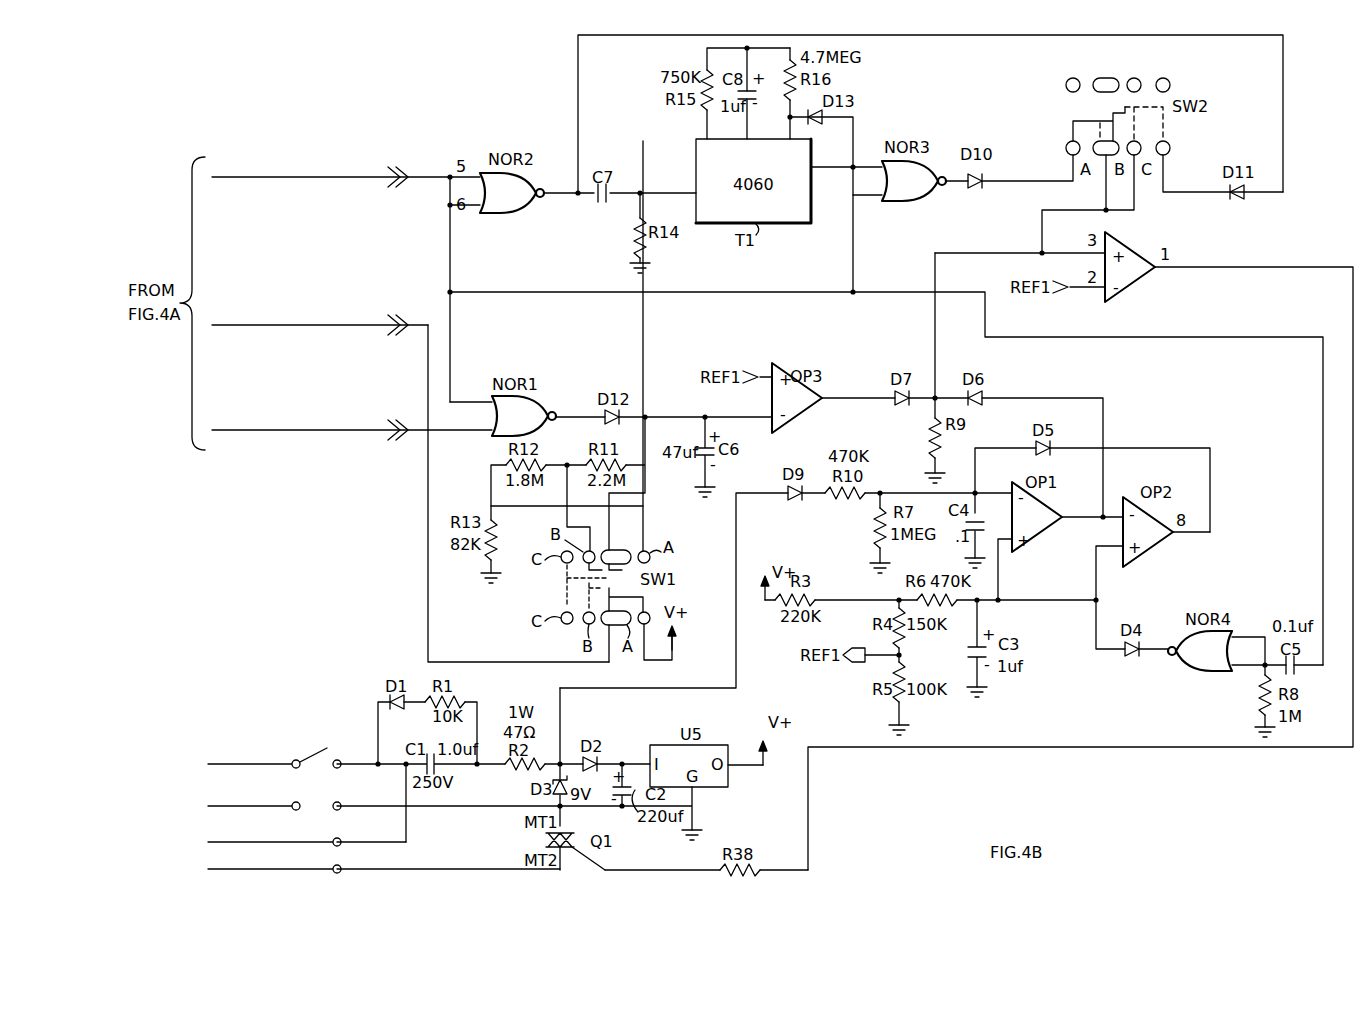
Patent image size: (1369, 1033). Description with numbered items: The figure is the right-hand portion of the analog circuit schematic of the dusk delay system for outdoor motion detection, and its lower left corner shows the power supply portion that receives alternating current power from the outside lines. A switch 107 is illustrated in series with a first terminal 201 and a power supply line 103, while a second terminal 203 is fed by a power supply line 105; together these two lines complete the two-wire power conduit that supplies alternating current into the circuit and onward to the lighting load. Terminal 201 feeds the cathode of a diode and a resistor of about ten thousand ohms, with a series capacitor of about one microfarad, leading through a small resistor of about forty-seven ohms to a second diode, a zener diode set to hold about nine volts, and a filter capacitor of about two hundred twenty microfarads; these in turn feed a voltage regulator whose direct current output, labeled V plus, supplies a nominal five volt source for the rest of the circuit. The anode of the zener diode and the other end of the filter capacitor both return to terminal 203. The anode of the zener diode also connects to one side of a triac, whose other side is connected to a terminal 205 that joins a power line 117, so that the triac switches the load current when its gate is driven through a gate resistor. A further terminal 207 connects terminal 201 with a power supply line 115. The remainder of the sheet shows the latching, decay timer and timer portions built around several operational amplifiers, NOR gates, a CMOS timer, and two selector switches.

The power supply line 103 is at (248, 764).
The power supply line 105 is at (226, 806).
The switch 107 is at (318, 758).
The power supply line 115 is at (265, 842).
The power line 117 is at (235, 866).
The first terminal 201 is at (338, 758).
The second terminal 203 is at (340, 806).
The terminal 205 is at (340, 869).
The terminal 207 is at (340, 842).